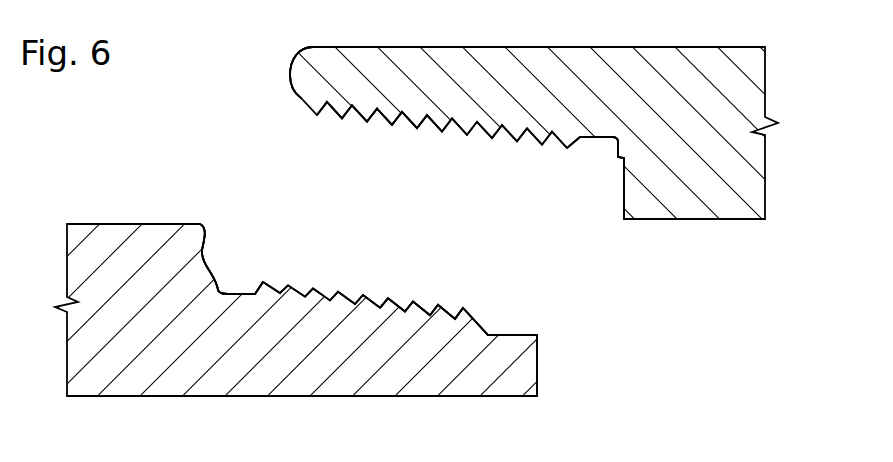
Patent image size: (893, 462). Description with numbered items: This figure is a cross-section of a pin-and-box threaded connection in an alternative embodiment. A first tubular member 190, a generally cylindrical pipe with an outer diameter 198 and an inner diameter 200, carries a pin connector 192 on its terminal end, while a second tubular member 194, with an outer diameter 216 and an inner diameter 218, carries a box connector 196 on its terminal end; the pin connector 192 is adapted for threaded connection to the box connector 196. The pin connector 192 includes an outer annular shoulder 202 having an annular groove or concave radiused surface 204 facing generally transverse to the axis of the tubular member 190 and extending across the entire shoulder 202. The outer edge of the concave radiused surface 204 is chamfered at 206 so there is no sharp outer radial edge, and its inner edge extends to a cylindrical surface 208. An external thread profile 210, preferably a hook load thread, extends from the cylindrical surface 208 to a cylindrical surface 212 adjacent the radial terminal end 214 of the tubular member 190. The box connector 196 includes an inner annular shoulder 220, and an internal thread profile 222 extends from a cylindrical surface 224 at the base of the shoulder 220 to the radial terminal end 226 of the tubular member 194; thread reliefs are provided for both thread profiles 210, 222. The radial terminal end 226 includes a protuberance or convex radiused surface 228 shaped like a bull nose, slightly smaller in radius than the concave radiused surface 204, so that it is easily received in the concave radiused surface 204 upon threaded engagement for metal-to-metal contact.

The first tubular member 190 is at (169, 383).
The pin connector 192 is at (445, 286).
The second tubular member 194 is at (750, 188).
The box connector 196 is at (382, 142).
The outer diameter 198 is at (118, 223).
The inner diameter 200 is at (329, 397).
The outer annular shoulder 202 is at (236, 246).
The concave radiused surface 204 is at (208, 255).
The chamfer 206 is at (204, 232).
The cylindrical surface 208 is at (234, 292).
The external thread profile 210 is at (370, 300).
The cylindrical surface 212 is at (513, 334).
The radial terminal end 214 is at (538, 366).
The outer diameter 216 is at (645, 47).
The inner diameter 218 is at (702, 220).
The inner annular shoulder 220 is at (623, 198).
The internal thread profile 222 is at (418, 128).
The cylindrical surface 224 is at (604, 137).
The radial terminal end 226 is at (289, 56).
The convex radiused surface 228 is at (290, 77).